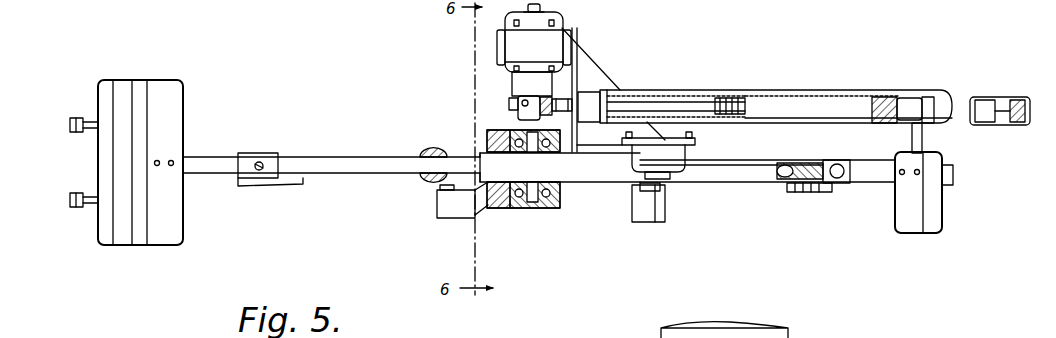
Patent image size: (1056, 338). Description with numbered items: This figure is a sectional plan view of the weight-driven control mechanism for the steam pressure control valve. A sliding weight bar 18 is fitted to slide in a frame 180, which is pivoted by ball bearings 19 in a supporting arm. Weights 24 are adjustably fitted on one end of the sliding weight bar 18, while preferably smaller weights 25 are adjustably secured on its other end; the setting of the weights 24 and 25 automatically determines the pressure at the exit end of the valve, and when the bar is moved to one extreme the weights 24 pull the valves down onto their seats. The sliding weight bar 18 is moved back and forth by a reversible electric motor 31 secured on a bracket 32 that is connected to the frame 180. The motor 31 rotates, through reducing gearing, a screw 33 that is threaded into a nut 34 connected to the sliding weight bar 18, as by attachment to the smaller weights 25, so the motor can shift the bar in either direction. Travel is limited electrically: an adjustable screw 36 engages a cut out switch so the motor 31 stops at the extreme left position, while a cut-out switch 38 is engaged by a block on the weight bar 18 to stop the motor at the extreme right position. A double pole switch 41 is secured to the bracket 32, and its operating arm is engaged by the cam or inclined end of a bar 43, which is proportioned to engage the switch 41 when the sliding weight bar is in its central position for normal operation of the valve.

The sliding weight bar 18 is at (373, 162).
The ball bearings 19 is at (510, 132).
The weights 24 is at (126, 179).
The smaller weights 25 is at (924, 189).
The reversible electric motor 31 is at (552, 48).
The bracket 32 is at (590, 70).
The screw 33 is at (728, 93).
The nut 34 is at (905, 95).
The screw 36 is at (809, 200).
The cut-out switch 38 is at (450, 212).
The double pole switch 41 is at (687, 160).
The bar 43 is at (765, 184).
The frame 180 is at (610, 168).